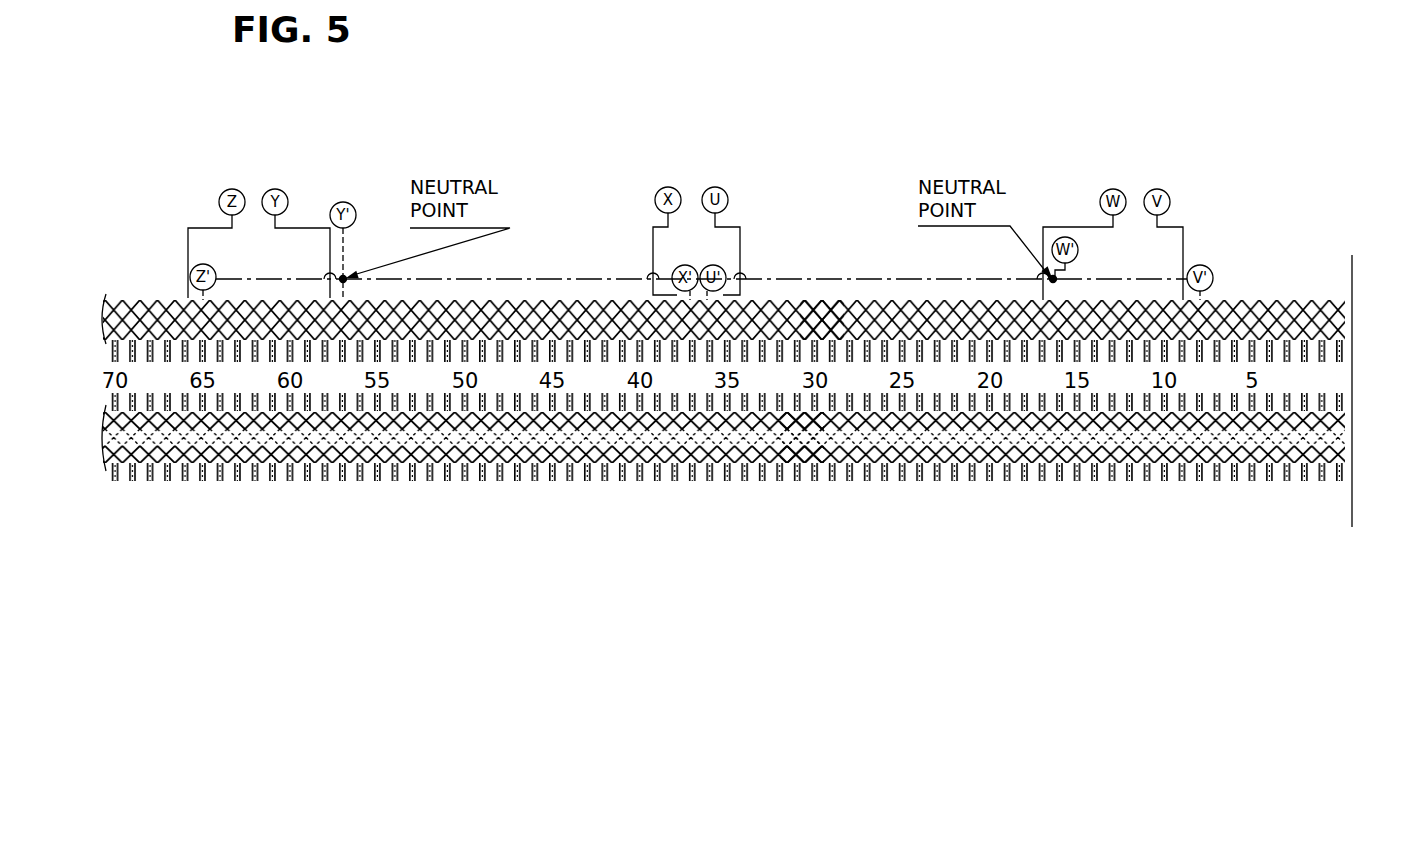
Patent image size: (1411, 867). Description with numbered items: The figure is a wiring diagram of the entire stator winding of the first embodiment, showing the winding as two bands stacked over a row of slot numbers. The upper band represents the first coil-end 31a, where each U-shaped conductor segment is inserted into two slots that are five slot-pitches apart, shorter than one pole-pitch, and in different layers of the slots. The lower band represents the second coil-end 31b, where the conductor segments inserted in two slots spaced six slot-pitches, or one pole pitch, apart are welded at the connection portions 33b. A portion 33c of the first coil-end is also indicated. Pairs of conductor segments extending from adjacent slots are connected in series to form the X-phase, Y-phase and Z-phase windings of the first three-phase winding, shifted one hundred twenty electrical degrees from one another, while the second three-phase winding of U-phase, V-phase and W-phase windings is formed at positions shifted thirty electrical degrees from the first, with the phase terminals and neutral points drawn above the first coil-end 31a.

The first coil-end 31a is at (1354, 298).
The second coil-end 31b is at (1354, 412).
The coil end turn portion of first winding 33c is at (823, 296).
The connection portions 33b is at (797, 485).